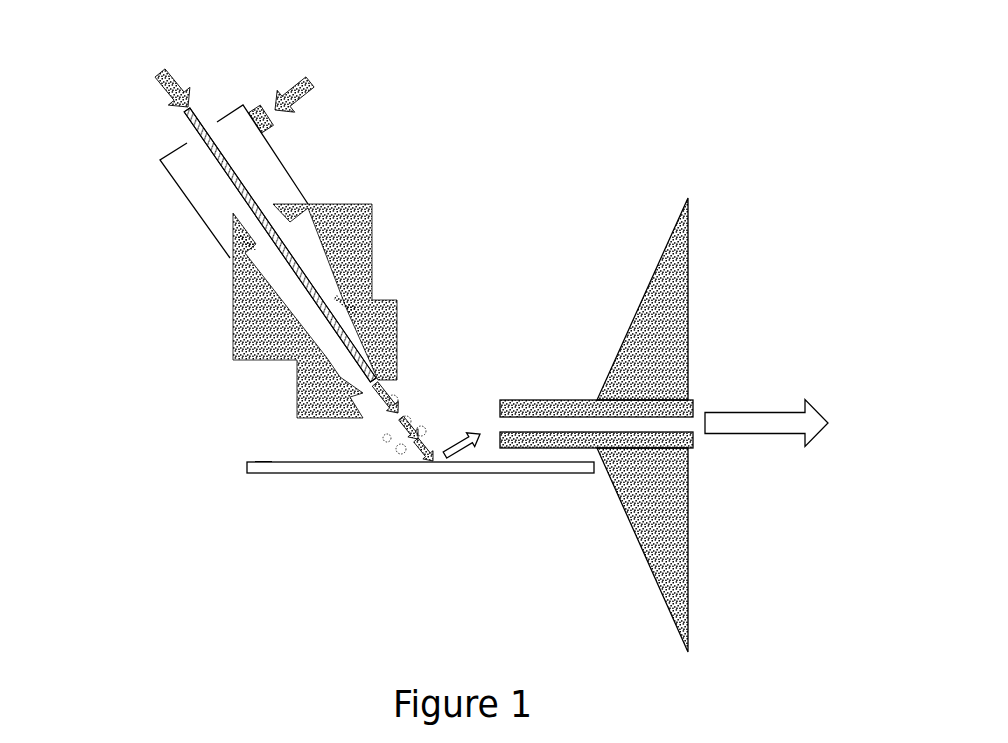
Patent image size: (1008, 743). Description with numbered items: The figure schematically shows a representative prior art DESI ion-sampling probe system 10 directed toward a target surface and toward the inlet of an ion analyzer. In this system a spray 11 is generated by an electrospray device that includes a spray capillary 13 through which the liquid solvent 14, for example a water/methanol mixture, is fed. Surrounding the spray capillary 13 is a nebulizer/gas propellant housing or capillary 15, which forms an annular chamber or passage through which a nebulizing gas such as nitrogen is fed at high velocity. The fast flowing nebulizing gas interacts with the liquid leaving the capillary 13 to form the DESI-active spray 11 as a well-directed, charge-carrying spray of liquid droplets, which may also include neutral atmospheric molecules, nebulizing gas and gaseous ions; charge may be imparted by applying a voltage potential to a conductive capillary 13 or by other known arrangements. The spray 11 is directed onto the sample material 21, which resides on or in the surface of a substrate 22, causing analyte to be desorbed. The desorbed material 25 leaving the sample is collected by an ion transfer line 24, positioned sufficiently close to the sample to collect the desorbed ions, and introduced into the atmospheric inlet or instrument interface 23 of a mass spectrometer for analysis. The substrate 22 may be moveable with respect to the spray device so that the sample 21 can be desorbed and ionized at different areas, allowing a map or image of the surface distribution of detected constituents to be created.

The DESI ion-sampling probe system 10 is at (577, 123).
The spray 11 is at (410, 407).
The spray capillary 13 is at (240, 183).
The liquid solvent 14 is at (160, 73).
The nebulizer/gas propellant housing or capillary 15 is at (392, 367).
The sample material 21 is at (262, 458).
The substrate 22 is at (265, 474).
The atmospheric inlet or instrument interface 23 is at (572, 449).
The ion transfer line 24 is at (708, 405).
The desorbed material 25 is at (462, 456).